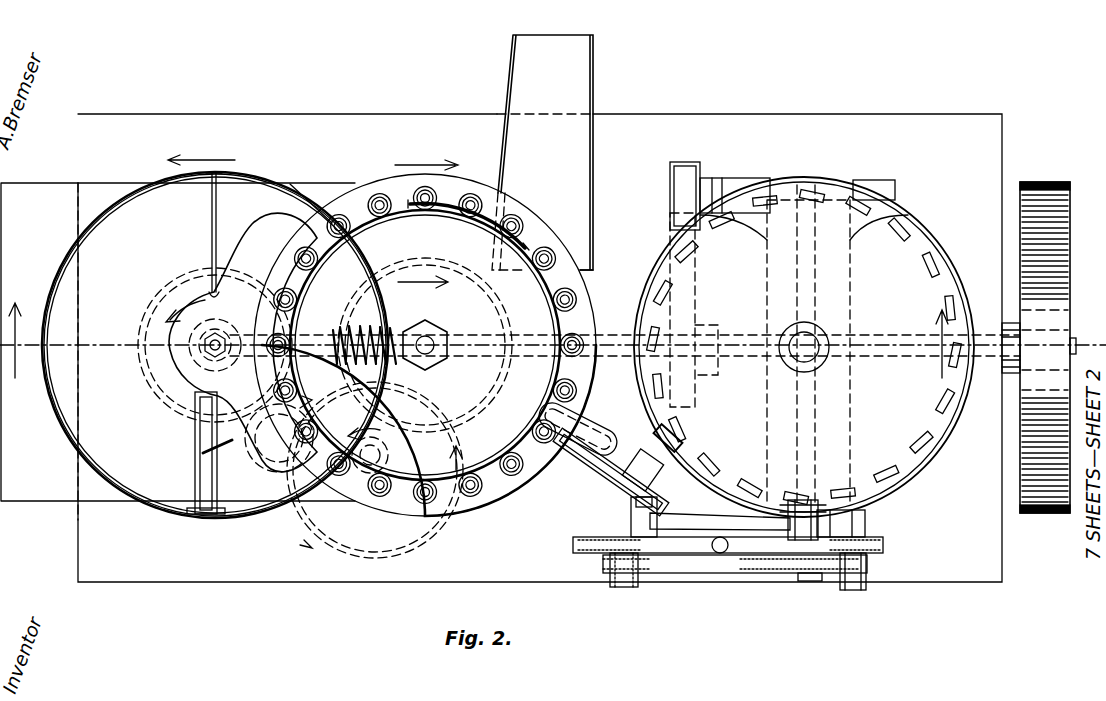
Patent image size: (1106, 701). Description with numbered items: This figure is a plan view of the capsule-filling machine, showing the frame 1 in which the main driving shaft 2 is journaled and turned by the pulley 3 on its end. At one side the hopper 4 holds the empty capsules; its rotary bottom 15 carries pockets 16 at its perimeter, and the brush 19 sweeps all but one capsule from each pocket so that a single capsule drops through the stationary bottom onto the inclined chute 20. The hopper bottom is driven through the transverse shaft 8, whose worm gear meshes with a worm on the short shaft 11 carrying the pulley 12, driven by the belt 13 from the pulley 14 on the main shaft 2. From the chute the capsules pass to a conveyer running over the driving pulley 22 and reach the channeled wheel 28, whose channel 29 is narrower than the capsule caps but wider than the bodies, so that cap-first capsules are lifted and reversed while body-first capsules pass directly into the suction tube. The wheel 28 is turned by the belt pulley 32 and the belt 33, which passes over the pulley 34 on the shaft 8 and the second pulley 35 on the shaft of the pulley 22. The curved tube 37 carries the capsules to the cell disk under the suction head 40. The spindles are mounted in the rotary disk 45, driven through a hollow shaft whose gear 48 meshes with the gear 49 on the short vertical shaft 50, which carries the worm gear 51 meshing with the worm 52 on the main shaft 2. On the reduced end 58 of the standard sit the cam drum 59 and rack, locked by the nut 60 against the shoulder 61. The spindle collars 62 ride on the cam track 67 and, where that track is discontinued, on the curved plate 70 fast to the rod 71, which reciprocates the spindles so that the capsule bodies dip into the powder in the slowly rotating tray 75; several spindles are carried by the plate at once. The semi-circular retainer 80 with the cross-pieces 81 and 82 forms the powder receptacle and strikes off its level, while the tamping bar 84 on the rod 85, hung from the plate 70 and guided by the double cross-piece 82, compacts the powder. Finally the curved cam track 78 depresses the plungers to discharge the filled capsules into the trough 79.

The frame 1 is at (799, 114).
The main driving shaft 2 is at (313, 337).
The pulley 3 is at (1040, 530).
The hopper 4 is at (926, 241).
The transverse shaft 8 is at (810, 578).
The short shaft 11 is at (893, 198).
The pulley 12 is at (668, 167).
The belt 13 is at (683, 213).
The pulley 14 is at (697, 294).
The hopper bottom 15 is at (804, 345).
The pockets 16 is at (954, 298).
The brush 19 is at (672, 447).
The inclined chute 20 is at (788, 522).
The driving pulley 22 is at (873, 545).
The channeled wheel 28 is at (607, 541).
The channel 29 is at (574, 548).
The belt pulley 32 is at (621, 577).
The belt 33 is at (720, 560).
The pulley 34 is at (787, 574).
The second pulley 35 is at (861, 575).
The curved tube 37 is at (700, 523).
The suction head 40 is at (568, 419).
The rotary disk 45 is at (545, 227).
The gear 48 is at (507, 308).
The gear 49 is at (352, 428).
The short vertical shaft 50 is at (396, 457).
The worm gear 51 is at (415, 543).
The worm 52 is at (390, 326).
The reduced end of standard 58 is at (425, 338).
The cam drum 59 is at (375, 233).
The nut 60 is at (446, 337).
The shoulder 61 is at (536, 474).
The collar 62 is at (530, 470).
The cam track 67 is at (575, 285).
The plate 70 is at (255, 236).
The rod 71 is at (219, 322).
The tray 75 is at (103, 246).
The curved cam track 78 is at (450, 204).
The trough 79 is at (585, 62).
The semi-circular retainer 80 is at (154, 182).
The cross-piece 81 is at (209, 213).
The cross-piece 82 is at (195, 438).
The tamping bar 84 is at (200, 480).
The rod 85 is at (231, 455).